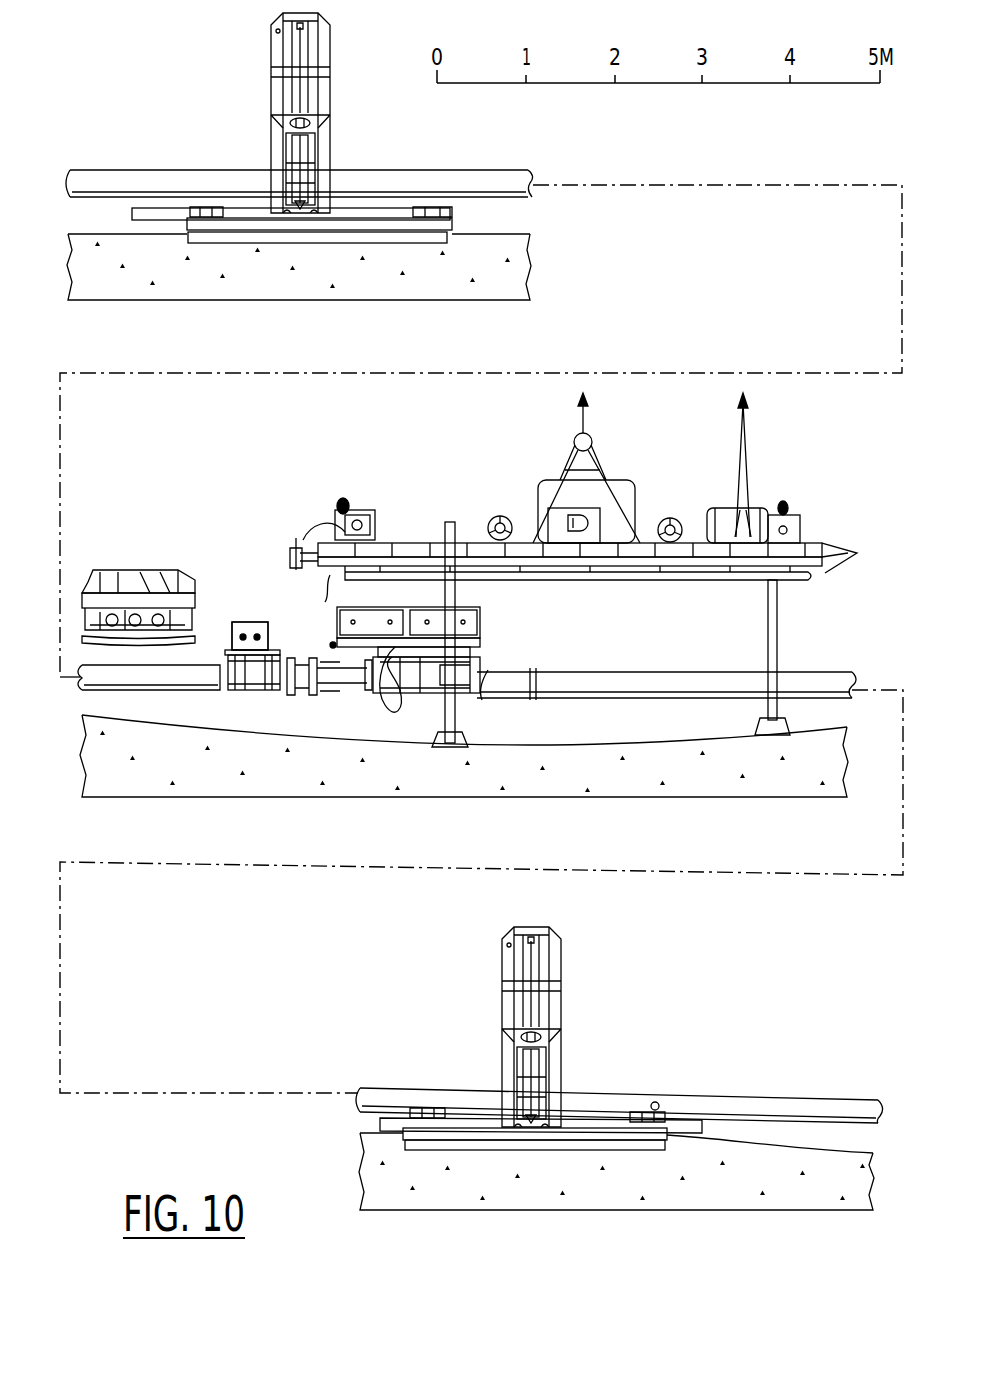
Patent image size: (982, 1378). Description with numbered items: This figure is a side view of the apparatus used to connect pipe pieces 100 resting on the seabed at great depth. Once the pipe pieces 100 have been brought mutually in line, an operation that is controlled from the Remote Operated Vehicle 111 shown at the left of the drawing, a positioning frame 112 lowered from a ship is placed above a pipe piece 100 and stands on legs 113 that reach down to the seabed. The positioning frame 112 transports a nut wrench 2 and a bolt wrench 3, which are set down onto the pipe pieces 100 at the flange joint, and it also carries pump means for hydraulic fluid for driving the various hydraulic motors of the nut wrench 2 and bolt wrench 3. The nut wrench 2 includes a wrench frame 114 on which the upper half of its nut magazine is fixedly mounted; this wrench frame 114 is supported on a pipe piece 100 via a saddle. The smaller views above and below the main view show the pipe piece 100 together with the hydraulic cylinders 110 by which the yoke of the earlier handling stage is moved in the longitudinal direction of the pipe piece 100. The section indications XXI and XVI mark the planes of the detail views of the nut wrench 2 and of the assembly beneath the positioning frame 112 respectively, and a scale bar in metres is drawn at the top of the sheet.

The pipe piece 100 is at (462, 176).
The hydraulic cylinder 110 is at (143, 217).
The Remote Operated Vehicle 111 is at (132, 567).
The positioning frame 112 is at (413, 512).
The leg 113 is at (448, 708).
The wrench frame 114 is at (247, 690).
The nut wrench 2 is at (260, 620).
The bolt wrench 3 is at (430, 694).
The section XXI indicator XXI is at (233, 617).
The section XVI indicator XVI is at (484, 623).